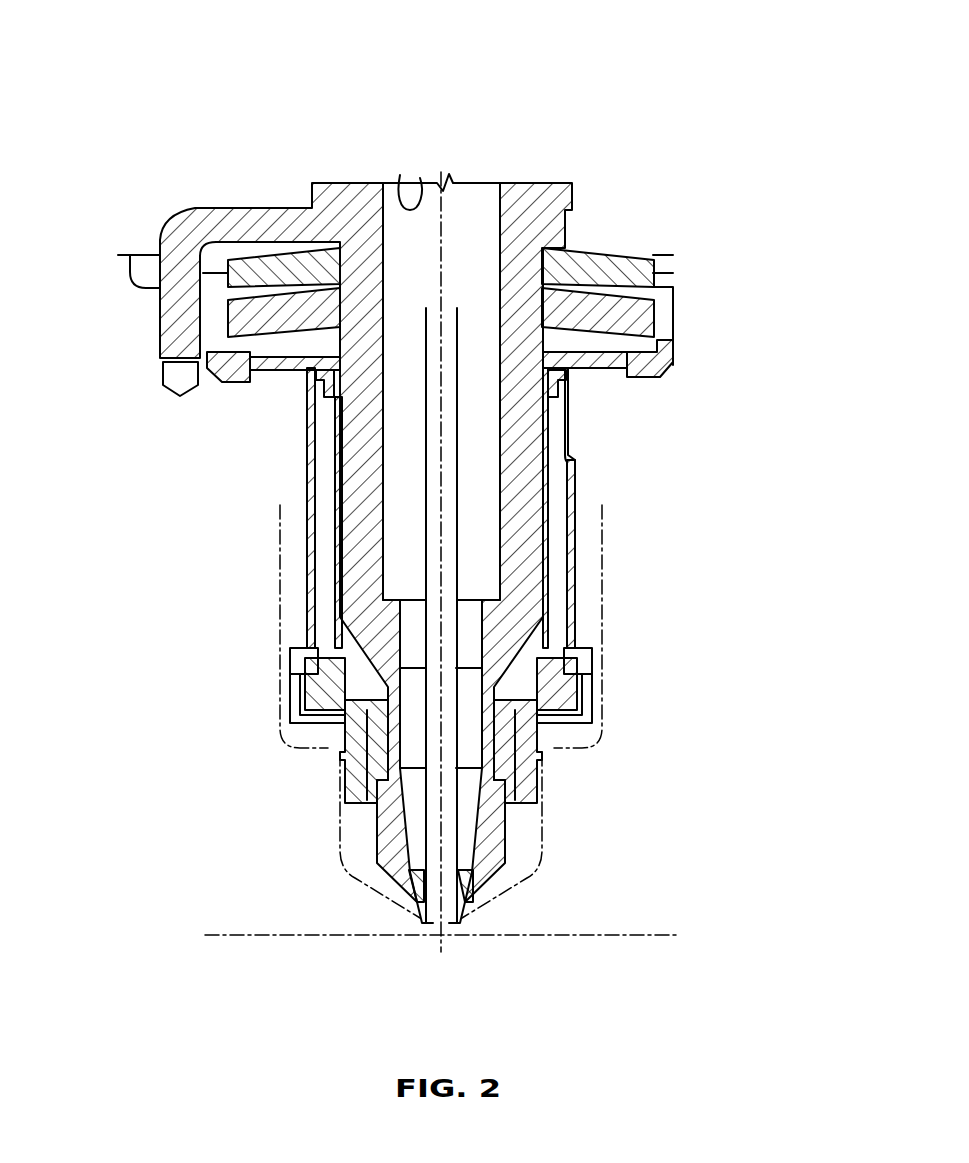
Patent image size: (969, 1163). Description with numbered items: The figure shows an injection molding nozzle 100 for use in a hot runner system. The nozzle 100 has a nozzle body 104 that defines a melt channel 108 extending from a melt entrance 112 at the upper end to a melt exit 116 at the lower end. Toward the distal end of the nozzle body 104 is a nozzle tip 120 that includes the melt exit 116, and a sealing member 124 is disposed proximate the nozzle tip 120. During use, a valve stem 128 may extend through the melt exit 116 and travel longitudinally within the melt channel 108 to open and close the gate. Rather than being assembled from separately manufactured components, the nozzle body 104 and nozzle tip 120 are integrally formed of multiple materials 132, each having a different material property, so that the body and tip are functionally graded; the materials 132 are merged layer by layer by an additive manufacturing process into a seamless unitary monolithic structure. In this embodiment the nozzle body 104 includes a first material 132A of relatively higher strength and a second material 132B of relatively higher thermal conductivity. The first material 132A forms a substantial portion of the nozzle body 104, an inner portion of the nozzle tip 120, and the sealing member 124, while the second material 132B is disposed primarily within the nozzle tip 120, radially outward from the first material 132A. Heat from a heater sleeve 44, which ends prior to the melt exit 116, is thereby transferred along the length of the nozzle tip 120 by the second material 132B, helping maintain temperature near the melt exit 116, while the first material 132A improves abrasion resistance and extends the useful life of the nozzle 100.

The injection molding nozzle 100 is at (701, 90).
The melt channel 108 is at (487, 168).
The melt entrance 112 is at (420, 178).
The valve stem 128 is at (432, 507).
The multiple materials 132 is at (318, 660).
The first material 132A is at (358, 536).
The second material 132B is at (375, 712).
The nozzle body 104 is at (554, 493).
The heater sleeve 44 is at (562, 551).
The nozzle tip 120 is at (323, 769).
The sealing member 124 is at (540, 762).
The melt exit 116 is at (466, 904).